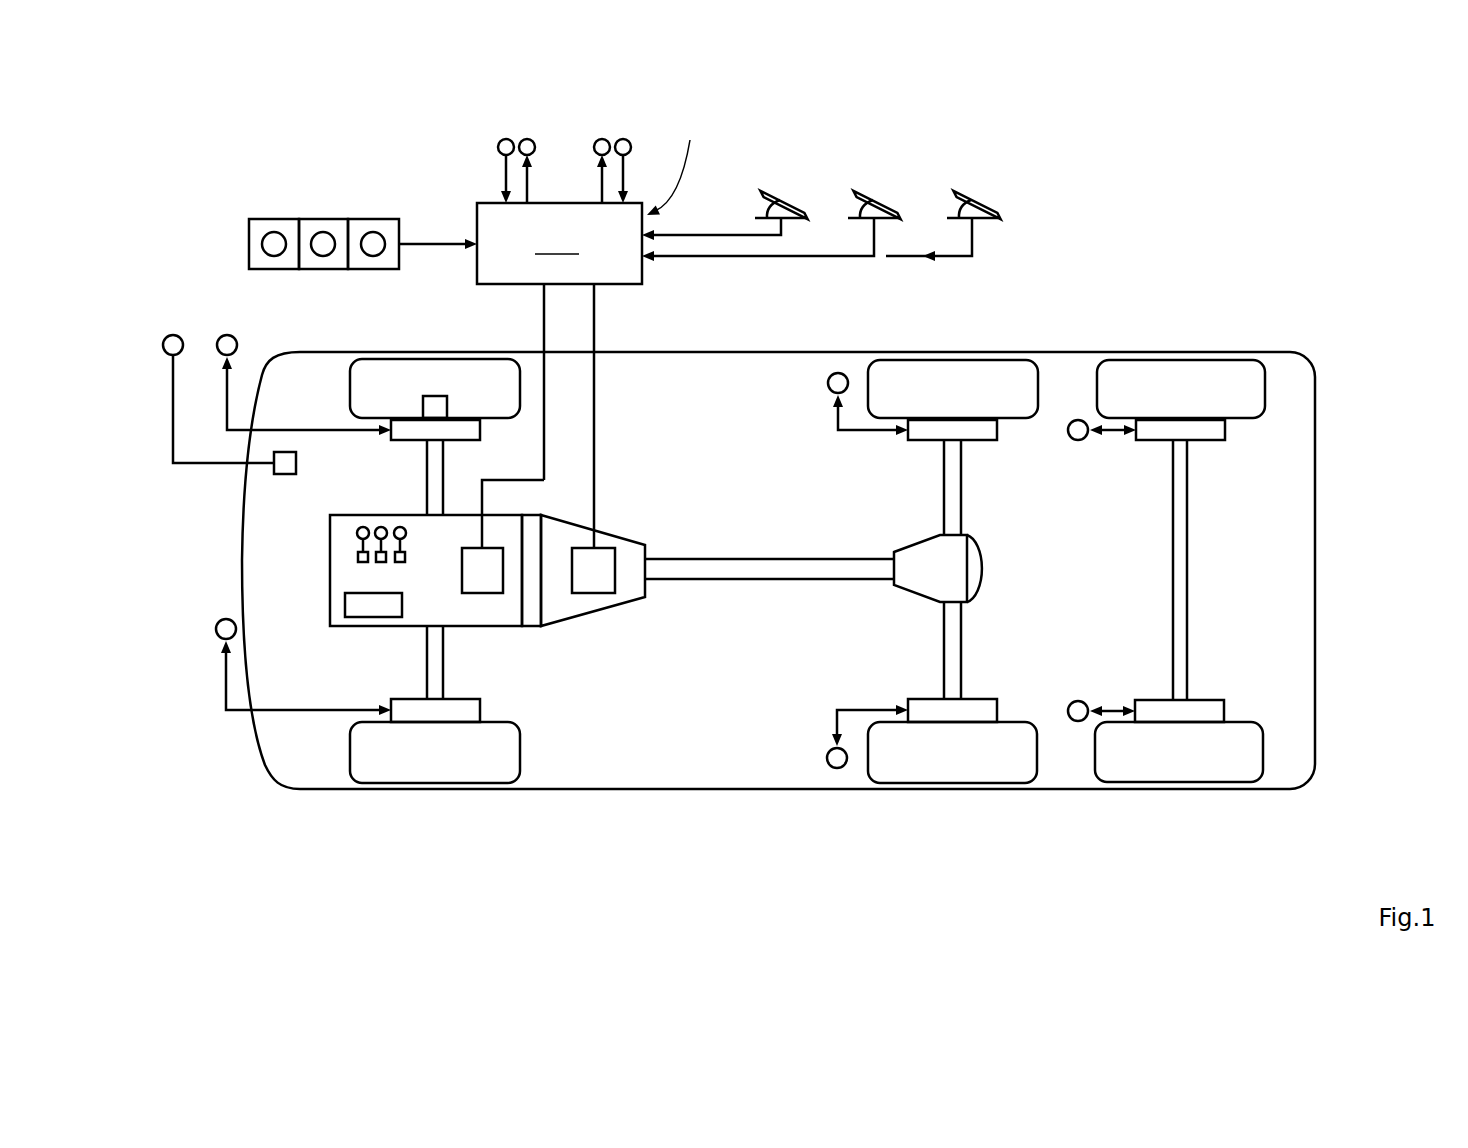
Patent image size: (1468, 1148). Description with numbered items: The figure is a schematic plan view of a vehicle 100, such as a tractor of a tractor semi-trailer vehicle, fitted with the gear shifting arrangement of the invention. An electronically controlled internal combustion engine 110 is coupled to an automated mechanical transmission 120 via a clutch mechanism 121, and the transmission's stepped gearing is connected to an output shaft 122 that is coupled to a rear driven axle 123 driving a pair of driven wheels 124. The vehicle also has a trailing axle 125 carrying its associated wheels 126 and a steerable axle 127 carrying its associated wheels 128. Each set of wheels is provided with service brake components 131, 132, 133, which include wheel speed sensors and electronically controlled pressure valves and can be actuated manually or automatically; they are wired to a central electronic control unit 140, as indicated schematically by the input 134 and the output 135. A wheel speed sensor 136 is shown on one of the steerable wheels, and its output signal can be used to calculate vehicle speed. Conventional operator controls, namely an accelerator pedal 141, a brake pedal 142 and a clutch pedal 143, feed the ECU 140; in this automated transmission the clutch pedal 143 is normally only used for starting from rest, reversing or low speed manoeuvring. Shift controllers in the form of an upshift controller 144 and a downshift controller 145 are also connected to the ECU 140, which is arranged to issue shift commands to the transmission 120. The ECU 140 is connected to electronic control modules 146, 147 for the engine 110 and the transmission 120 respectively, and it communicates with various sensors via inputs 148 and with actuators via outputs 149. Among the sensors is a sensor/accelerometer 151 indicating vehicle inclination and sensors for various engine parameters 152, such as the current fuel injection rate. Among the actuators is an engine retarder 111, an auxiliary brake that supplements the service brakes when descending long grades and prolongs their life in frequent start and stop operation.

The vehicle 100 is at (626, 822).
The internal combustion engine 110 is at (320, 621).
The engine retarder 111 is at (355, 605).
The automated mechanical transmission 120 is at (612, 627).
The clutch mechanism 121 is at (534, 644).
The output shaft 122 is at (711, 597).
The driven axle 123 is at (977, 632).
The driven wheels 124 is at (917, 773).
The trailing axle 125 is at (1200, 567).
The wheels 126 is at (1140, 772).
The steerable axle 127 is at (413, 678).
The wheels 128 is at (393, 772).
The service brake components 131 is at (962, 735).
The service brake components 132 is at (1186, 737).
The service brake components 133 is at (446, 735).
The input 134 is at (500, 141).
The output 135 is at (527, 139).
The wheel speed sensor 136 is at (411, 389).
The central electronic control unit 140 is at (583, 344).
The accelerator pedal 141 is at (782, 200).
The brake pedal 142 is at (877, 200).
The clutch pedal 143 is at (258, 205).
The upshift controller 144 is at (318, 205).
The downshift controller 145 is at (373, 205).
The electronic control module 146 is at (490, 570).
The electronic control module 147 is at (602, 568).
The inputs 148 is at (625, 139).
The outputs 149 is at (601, 139).
The sensor/accelerometer 151 is at (258, 480).
The sensors for engine parameters 152 is at (335, 549).